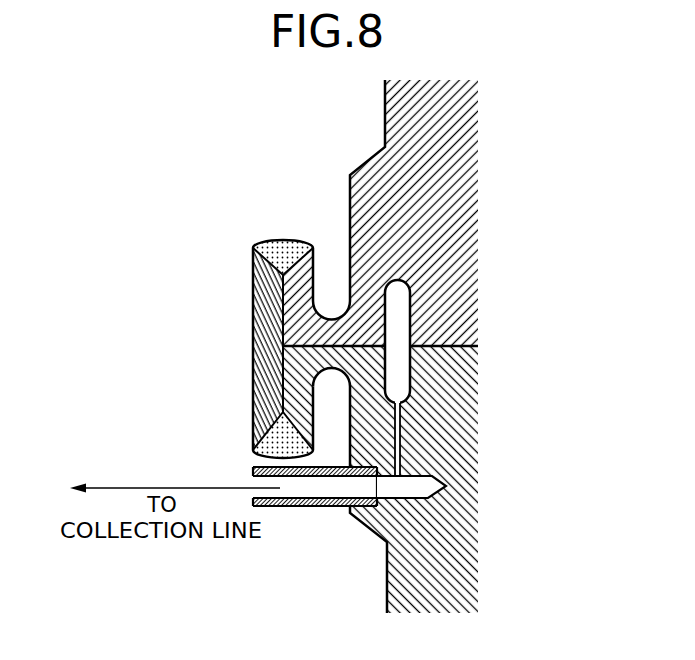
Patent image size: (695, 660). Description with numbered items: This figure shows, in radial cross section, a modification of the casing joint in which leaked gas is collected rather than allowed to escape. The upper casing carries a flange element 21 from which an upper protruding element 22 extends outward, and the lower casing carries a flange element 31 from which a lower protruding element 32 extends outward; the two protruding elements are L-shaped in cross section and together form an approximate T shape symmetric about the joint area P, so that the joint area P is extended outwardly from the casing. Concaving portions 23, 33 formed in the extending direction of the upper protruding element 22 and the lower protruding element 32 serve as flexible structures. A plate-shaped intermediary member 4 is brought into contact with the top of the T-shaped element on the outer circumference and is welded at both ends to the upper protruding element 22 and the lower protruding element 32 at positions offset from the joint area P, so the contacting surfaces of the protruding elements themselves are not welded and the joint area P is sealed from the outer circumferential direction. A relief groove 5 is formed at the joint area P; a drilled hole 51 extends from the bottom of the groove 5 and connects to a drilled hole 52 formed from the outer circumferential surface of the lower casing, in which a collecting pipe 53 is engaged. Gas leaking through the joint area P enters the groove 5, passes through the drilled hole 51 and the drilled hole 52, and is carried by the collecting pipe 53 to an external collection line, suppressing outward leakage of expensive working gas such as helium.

The intermediary member 4 is at (254, 320).
The groove 5 is at (398, 375).
The flange element 21 is at (363, 158).
The upper protruding element 22 is at (311, 274).
The concaving portion 23 is at (327, 305).
The flange element 31 is at (385, 575).
The lower protruding element 32 is at (302, 377).
The concaving portion 33 is at (323, 388).
The drilled hole 51 is at (400, 438).
The drilled hole 52 is at (433, 483).
The collecting pipe 53 is at (307, 507).
The joint area P is at (477, 347).